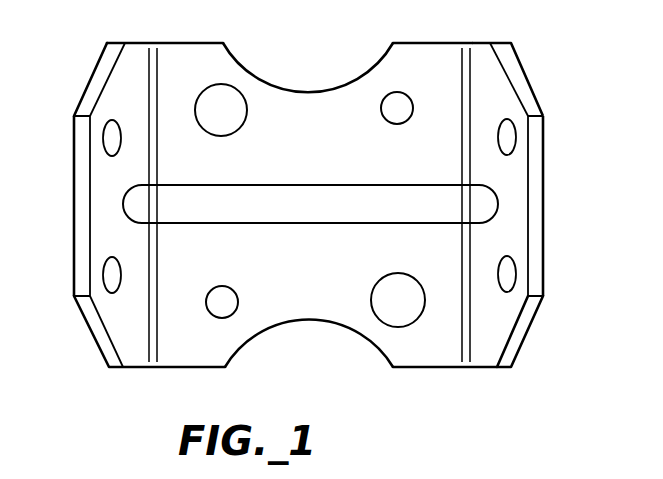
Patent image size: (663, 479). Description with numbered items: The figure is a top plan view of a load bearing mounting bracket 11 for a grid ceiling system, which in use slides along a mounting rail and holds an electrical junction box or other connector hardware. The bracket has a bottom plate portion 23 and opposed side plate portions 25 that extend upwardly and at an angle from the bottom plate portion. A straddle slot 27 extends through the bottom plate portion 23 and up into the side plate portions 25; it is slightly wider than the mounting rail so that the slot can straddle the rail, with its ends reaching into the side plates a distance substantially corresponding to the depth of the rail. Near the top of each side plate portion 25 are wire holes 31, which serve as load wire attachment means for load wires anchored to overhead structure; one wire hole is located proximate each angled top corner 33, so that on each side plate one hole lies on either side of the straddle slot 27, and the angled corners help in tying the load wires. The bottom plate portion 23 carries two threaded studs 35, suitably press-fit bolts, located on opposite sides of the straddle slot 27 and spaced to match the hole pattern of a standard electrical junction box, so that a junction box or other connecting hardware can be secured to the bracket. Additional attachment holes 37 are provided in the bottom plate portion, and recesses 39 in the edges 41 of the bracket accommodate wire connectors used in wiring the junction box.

The mounting bracket 11 is at (485, 303).
The bottom plate portion 23 is at (200, 347).
The side plate portions 25 is at (82, 211).
The straddle slot 27 is at (280, 213).
The wire holes 31 is at (108, 142).
The angled top corner 33 is at (218, 100).
The threaded studs 35 is at (390, 302).
The holes 37 is at (397, 108).
The recesses 39 is at (308, 90).
The edges 41 is at (489, 43).